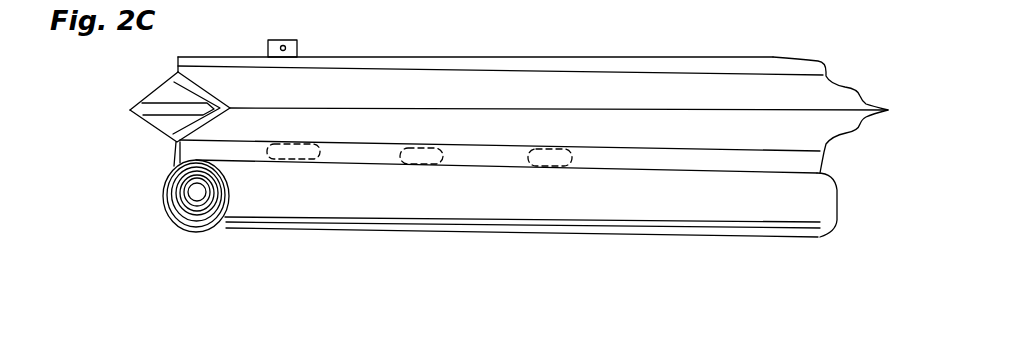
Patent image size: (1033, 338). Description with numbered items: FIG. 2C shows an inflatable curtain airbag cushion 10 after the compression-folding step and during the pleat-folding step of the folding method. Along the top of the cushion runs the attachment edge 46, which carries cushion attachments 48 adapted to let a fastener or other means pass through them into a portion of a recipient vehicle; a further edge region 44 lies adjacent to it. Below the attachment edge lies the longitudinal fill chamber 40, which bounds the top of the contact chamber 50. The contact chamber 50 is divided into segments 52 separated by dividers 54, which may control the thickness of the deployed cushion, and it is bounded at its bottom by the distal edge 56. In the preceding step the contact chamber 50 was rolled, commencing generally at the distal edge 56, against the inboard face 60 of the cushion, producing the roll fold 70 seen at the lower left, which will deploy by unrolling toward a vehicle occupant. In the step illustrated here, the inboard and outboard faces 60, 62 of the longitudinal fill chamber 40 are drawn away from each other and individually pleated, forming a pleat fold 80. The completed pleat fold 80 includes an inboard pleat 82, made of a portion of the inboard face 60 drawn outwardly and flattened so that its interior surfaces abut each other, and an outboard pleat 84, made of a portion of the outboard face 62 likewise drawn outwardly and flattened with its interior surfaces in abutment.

The inflatable curtain airbag cushion 10 is at (613, 48).
The longitudinal fill chamber 40 is at (105, 72).
The top rail 44 is at (224, 85).
The attachment edge 46 is at (390, 62).
The cushion attachments 48 is at (286, 48).
The contact chamber 50 is at (100, 170).
The segments 52 is at (222, 157).
The dividers 54 is at (318, 160).
The distal edge 56 is at (203, 200).
The inboard face 60 is at (518, 88).
The outboard face 62 is at (150, 80).
The roll fold 70 is at (297, 203).
The pleat fold 80 is at (132, 88).
The inboard pleat 82 is at (487, 108).
The outboard pleat 84 is at (130, 112).